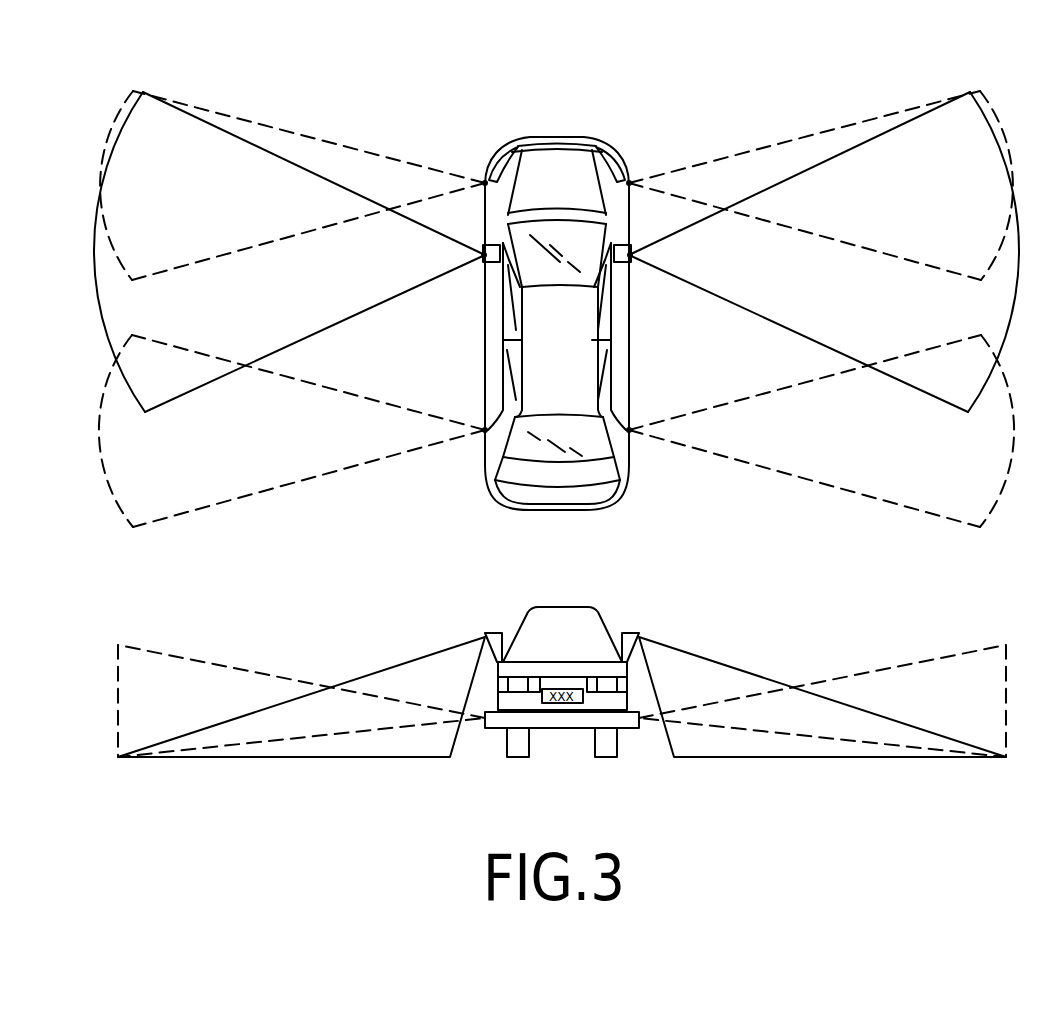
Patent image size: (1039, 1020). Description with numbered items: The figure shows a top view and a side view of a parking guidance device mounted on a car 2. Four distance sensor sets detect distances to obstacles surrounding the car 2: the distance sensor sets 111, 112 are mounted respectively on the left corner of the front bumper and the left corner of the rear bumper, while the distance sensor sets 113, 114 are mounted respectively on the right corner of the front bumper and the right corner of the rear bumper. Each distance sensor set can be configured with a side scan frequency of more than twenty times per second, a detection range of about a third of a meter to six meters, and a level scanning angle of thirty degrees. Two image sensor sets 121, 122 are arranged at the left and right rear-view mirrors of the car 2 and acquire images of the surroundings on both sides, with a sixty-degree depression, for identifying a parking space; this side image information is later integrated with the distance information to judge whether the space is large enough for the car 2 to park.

The car 2 is at (550, 137).
The distance sensor set 111 is at (484, 181).
The distance sensor set 112 is at (483, 436).
The distance sensor set 113 is at (630, 181).
The distance sensor set 114 is at (631, 436).
The image sensor set 121 is at (483, 256).
The image sensor set 122 is at (630, 256).